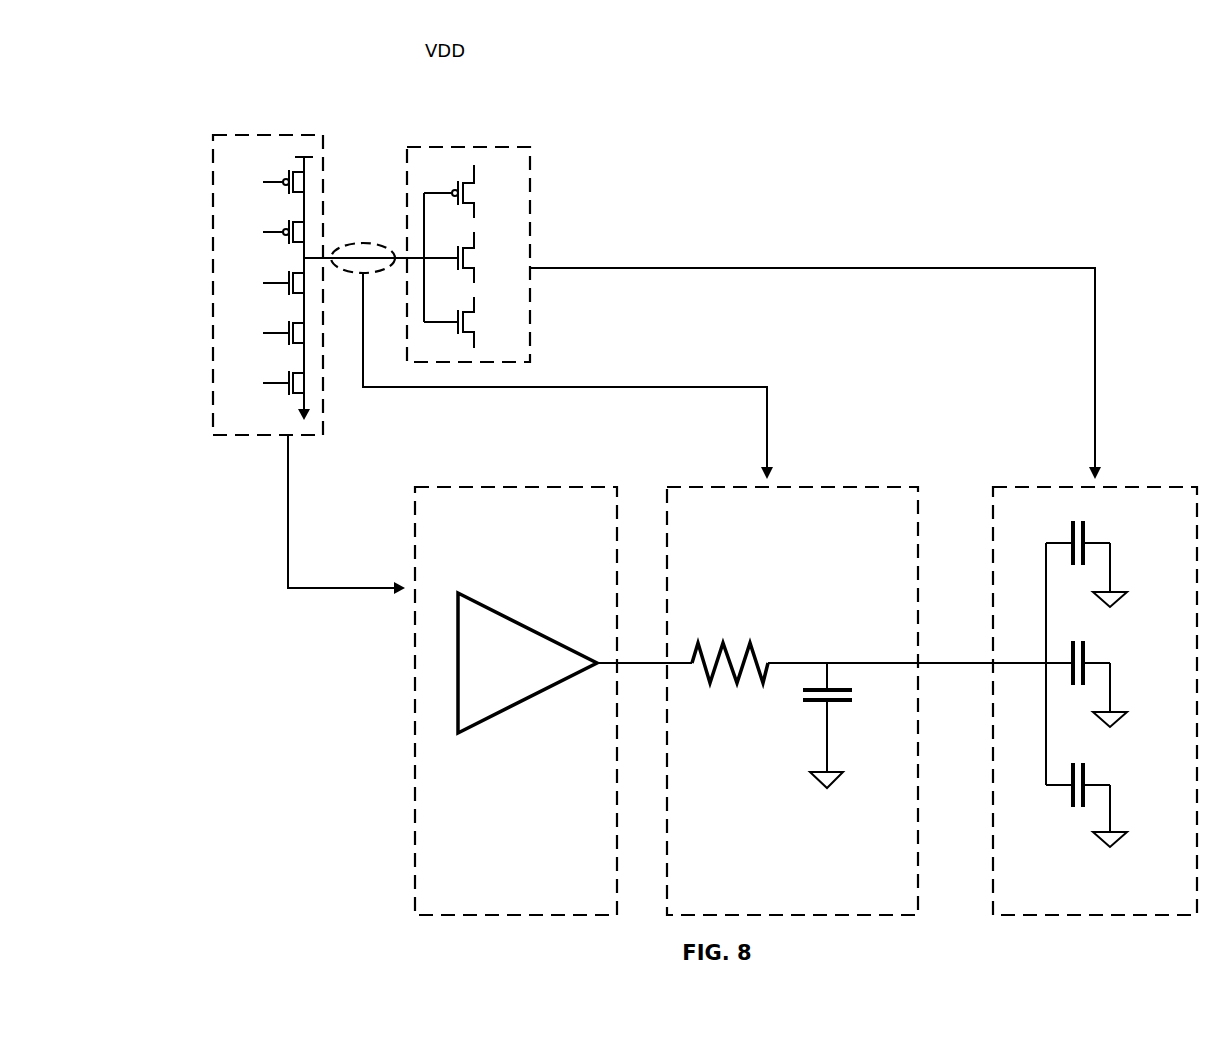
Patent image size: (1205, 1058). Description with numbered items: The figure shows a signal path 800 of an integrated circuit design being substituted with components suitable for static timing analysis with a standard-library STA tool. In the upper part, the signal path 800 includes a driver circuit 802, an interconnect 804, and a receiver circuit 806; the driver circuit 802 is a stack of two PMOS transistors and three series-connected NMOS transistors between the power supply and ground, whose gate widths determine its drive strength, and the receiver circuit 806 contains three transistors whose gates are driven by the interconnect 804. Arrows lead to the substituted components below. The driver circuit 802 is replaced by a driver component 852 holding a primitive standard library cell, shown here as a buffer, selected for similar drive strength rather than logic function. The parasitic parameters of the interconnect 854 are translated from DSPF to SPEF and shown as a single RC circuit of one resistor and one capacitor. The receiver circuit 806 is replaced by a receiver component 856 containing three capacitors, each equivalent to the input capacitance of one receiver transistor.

The signal path 800 is at (176, 228).
The driver circuit 802 is at (213, 437).
The interconnect 804 is at (343, 246).
The receiver circuit 806 is at (530, 188).
The driver component 852 is at (516, 701).
The interconnect 854 is at (835, 701).
The receiver component 856 is at (1095, 701).